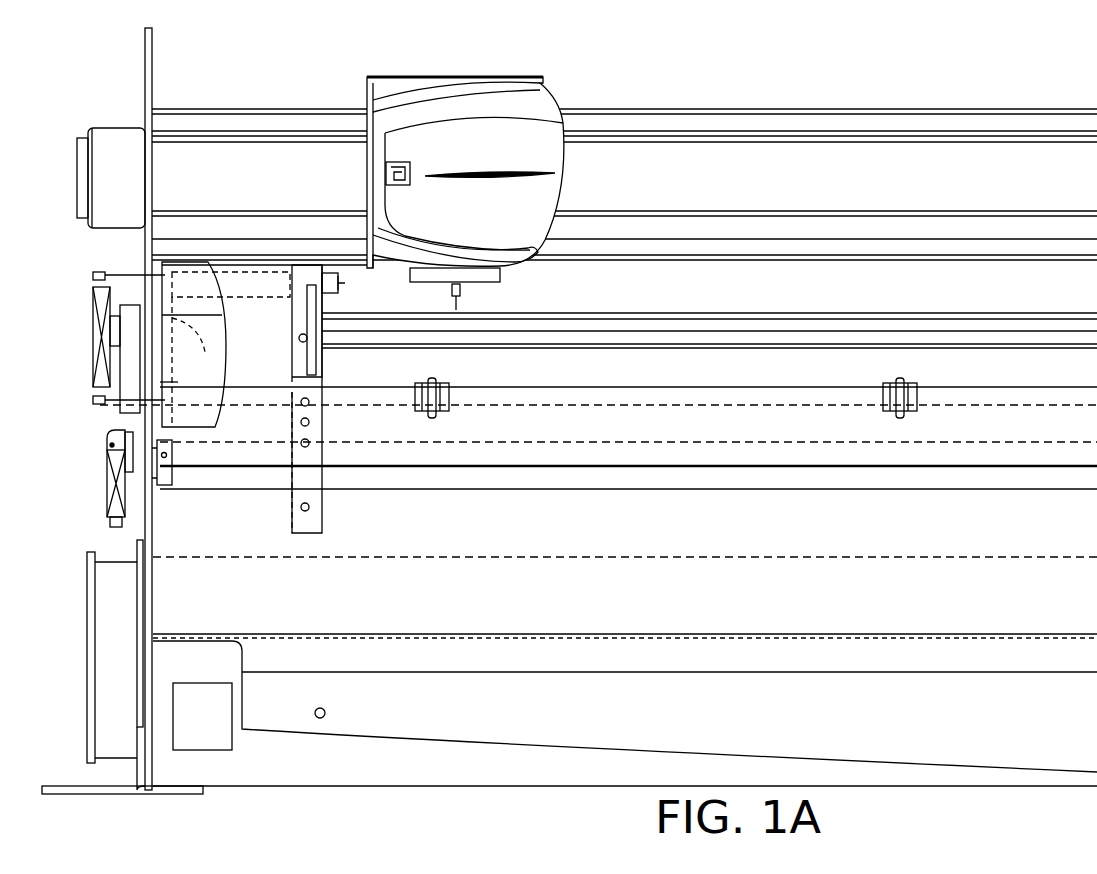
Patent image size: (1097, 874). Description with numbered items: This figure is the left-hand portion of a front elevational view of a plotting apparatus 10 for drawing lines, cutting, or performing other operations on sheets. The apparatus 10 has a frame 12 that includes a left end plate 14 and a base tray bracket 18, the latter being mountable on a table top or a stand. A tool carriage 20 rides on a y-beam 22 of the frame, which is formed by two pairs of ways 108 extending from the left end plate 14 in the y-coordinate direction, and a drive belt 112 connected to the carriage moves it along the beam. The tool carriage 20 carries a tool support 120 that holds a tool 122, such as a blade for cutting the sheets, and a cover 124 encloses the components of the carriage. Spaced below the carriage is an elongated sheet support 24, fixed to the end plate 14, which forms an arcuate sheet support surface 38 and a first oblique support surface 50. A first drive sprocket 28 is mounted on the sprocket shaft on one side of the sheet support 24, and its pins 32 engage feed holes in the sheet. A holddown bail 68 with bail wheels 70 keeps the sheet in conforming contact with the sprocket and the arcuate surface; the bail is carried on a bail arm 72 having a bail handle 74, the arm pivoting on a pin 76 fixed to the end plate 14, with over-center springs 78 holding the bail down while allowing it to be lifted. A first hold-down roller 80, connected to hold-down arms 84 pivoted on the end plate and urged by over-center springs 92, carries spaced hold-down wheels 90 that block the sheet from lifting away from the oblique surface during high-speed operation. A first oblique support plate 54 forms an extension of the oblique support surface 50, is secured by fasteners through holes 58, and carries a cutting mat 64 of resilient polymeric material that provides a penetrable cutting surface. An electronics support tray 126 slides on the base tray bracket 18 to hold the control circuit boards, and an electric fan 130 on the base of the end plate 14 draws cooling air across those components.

The apparatus 10 is at (926, 88).
The frame 12 is at (168, 92).
The left end plate 14 is at (144, 88).
The base tray bracket 18 is at (104, 790).
The tool carriage 20 is at (504, 145).
The y-beam 22 is at (695, 112).
The sheet support 24 is at (764, 310).
The first drive sprocket 28 is at (325, 480).
The pins 32 is at (305, 538).
The arcuate sheet support surface 38 is at (953, 313).
The first oblique support surface 50 is at (628, 422).
The first oblique support plate 54 is at (425, 716).
The holes 58 is at (324, 709).
The cutting mat 64 is at (625, 579).
The holddown bails 68 is at (350, 287).
The bail wheels 70 is at (322, 358).
The bail arm 72 is at (231, 325).
The bail handle 74 is at (186, 286).
The pin 76 is at (164, 488).
The over-center springs 78 is at (107, 490).
The first hold-down roller 80 is at (536, 400).
The hold-down arms 84 is at (128, 310).
The hold-down wheels 90 is at (432, 380).
The over-center springs 92 is at (93, 345).
The ways 108 is at (818, 128).
The drive belt 112 is at (962, 172).
The tool support 120 is at (460, 290).
The tool 122 is at (452, 292).
The cover 124 is at (517, 140).
The electronics support tray 126 is at (215, 727).
The electric fan 130 is at (87, 672).